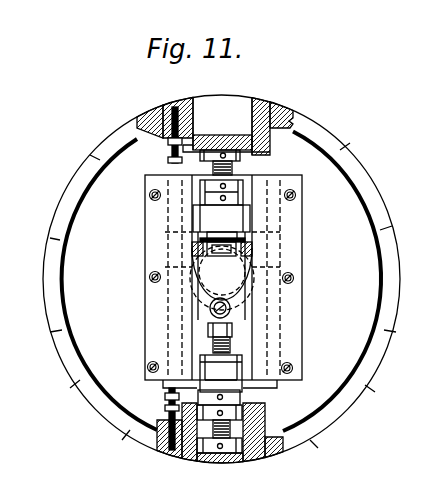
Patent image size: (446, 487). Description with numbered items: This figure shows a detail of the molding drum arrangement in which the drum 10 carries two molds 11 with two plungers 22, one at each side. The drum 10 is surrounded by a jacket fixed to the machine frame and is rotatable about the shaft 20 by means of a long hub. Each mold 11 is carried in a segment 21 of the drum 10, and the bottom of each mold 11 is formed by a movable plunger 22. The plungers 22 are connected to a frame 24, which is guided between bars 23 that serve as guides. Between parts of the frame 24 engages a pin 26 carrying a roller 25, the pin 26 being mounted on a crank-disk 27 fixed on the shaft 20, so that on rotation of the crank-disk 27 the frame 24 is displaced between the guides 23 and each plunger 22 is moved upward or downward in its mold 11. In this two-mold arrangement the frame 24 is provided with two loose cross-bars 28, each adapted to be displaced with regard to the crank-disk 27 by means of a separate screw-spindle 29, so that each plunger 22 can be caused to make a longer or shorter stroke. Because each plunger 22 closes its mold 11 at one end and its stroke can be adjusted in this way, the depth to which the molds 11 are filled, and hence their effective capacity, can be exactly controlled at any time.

The rotary drum 10 is at (67, 337).
The mold 11 is at (203, 126).
The shaft 20 is at (207, 277).
The segment 21 is at (290, 112).
The movable plunger 22 is at (230, 130).
The bars 23 is at (152, 238).
The frame 24 is at (210, 212).
The roller 25 is at (230, 305).
The pin 26 is at (235, 315).
The crank-disk 27 is at (238, 320).
The cross-bar 28 is at (247, 267).
The screw-spindle 29 is at (230, 170).